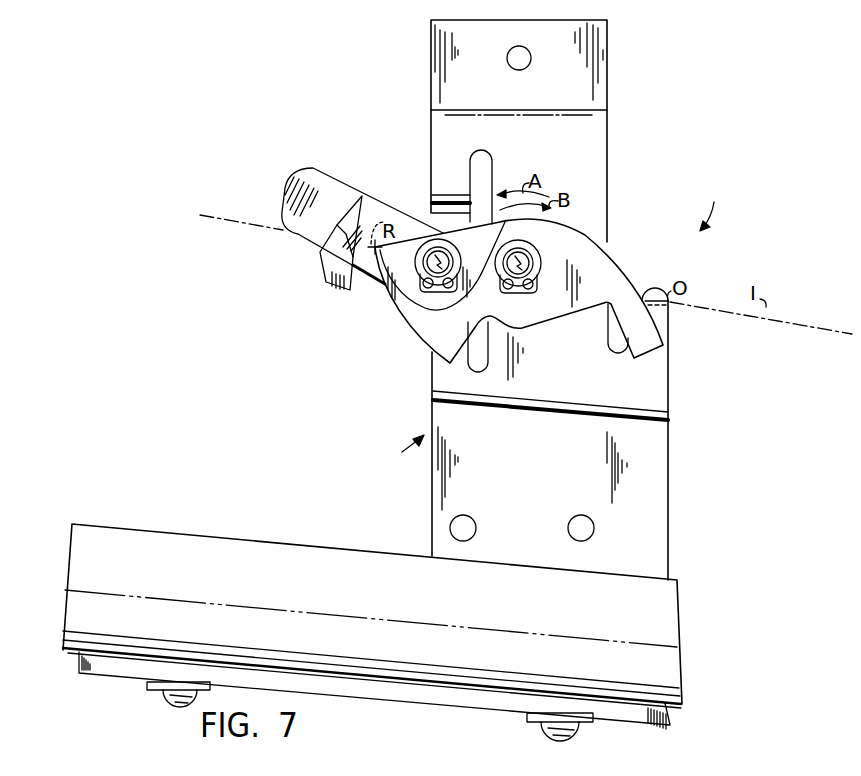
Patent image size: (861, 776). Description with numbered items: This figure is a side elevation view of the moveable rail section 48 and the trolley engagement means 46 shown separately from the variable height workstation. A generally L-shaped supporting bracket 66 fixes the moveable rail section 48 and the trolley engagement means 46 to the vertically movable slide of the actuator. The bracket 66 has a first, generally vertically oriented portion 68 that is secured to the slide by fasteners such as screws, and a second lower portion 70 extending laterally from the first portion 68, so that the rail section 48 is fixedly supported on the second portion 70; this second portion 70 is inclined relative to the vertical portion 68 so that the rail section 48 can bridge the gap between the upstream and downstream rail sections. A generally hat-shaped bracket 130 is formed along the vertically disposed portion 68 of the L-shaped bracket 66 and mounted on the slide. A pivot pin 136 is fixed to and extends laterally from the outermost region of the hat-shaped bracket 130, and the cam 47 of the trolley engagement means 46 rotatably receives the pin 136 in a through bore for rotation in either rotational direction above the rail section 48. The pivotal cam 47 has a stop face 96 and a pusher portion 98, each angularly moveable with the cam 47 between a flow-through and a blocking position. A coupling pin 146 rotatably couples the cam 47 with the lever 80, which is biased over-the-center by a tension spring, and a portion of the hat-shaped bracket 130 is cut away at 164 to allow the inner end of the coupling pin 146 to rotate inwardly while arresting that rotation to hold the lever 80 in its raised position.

The hat-shaped bracket 130 is at (609, 135).
The cut away 164 is at (489, 178).
The lever 80 is at (313, 168).
The cam 47 is at (620, 253).
The pusher portion 98 is at (450, 364).
The coupling pin 146 is at (449, 258).
The pivot pin 136 is at (528, 263).
The trolley engagement means 46 is at (712, 204).
The stop face 96 is at (660, 335).
The first, generally vertically oriented portion 68 is at (653, 479).
The L-shaped supporting bracket 66 is at (398, 451).
The moveable rail section 48 is at (670, 592).
The second lower portion 70 is at (620, 722).